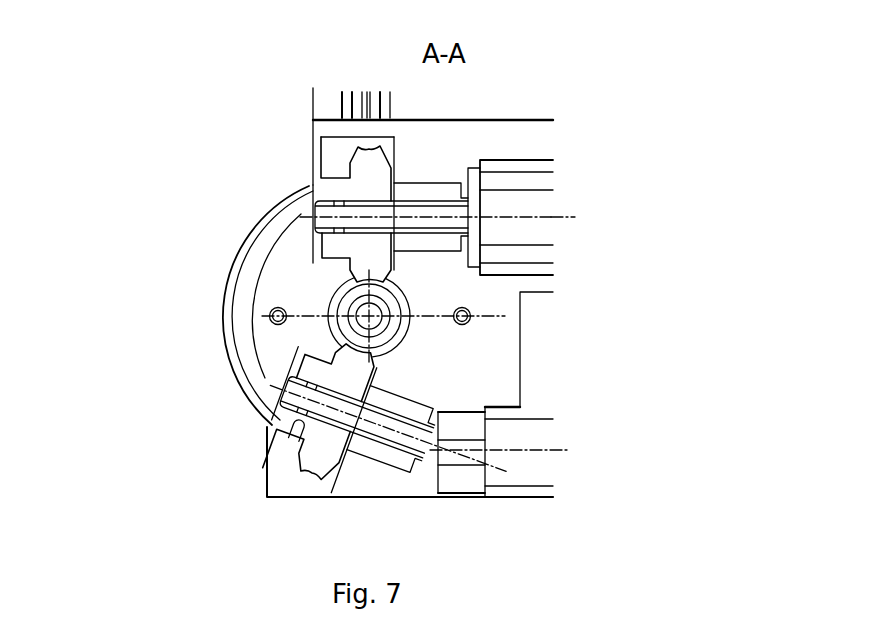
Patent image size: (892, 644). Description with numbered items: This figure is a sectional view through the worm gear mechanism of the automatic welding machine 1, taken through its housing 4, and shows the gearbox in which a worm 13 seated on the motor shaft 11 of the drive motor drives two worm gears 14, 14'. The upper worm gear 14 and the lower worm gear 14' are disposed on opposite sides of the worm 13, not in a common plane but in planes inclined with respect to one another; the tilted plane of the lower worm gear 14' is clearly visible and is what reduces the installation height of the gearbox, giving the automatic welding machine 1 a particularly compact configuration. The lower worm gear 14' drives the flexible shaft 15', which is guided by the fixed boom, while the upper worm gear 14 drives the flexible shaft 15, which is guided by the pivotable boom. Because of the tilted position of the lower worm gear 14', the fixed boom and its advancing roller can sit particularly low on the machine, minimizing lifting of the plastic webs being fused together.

The automatic welding machine 1 is at (605, 173).
The housing 4 is at (430, 134).
The motor shaft 11 is at (363, 317).
The worm 13 is at (337, 290).
The upper worm gear 14 is at (302, 209).
The lower worm gear 14' is at (278, 435).
The flexible shaft 15 is at (599, 246).
The flexible shaft 15' is at (587, 441).